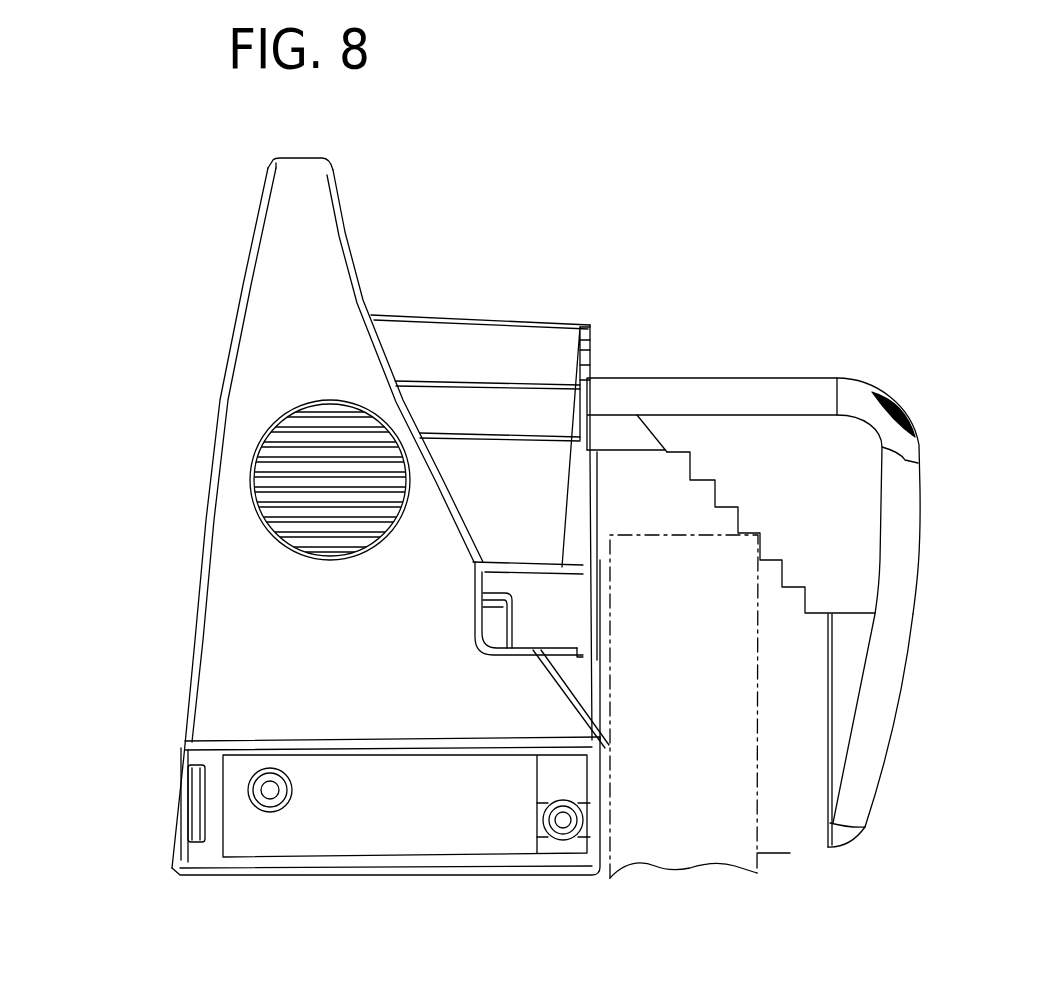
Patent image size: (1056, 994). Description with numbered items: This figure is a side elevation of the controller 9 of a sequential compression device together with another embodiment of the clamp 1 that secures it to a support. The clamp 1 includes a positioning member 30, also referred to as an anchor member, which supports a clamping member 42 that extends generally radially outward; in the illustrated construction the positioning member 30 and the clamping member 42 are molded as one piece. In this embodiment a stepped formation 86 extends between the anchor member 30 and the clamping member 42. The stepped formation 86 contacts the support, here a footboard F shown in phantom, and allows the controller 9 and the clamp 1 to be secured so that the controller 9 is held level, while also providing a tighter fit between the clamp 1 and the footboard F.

The clamp 1 is at (955, 401).
The controller 9 is at (519, 246).
The positioning member 30 is at (722, 381).
The clamping member 42 is at (923, 665).
The stepped formation 86 is at (762, 518).
The footboard F is at (790, 853).